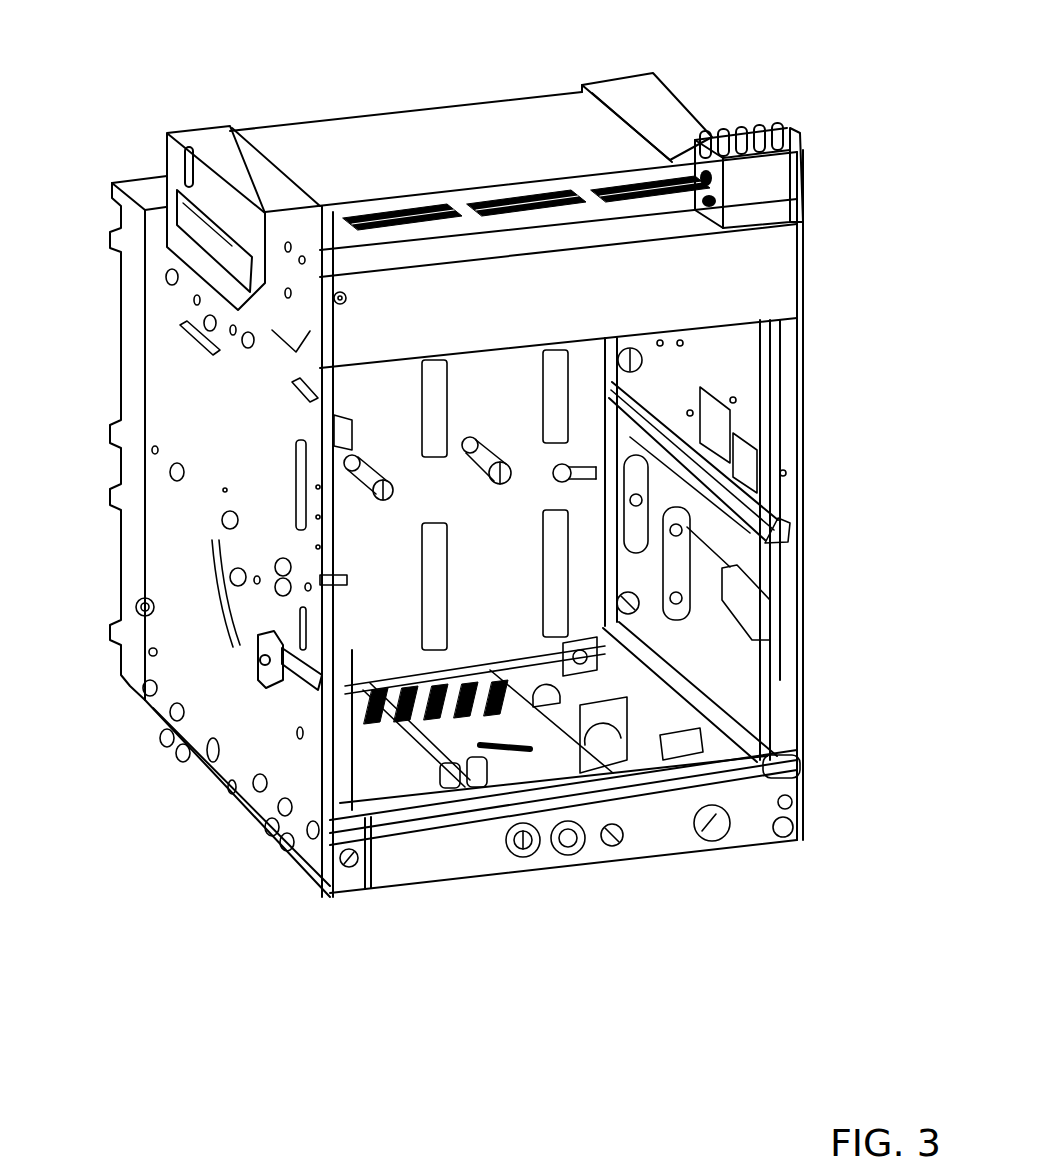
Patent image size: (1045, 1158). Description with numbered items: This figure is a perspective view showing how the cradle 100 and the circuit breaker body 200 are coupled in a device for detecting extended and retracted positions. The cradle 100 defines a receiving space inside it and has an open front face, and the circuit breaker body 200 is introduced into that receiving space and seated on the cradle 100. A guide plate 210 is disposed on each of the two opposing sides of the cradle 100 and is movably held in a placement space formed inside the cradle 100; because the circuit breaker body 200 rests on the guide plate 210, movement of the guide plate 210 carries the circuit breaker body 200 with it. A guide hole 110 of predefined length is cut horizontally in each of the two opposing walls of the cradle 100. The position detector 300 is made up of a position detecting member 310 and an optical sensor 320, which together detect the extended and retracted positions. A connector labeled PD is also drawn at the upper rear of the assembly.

The cradle 100 is at (195, 405).
The circuit breaker body 200 is at (516, 428).
The position detector connector PD is at (790, 175).
The guide hole 110 is at (330, 895).
The guide plate 210 is at (365, 810).
The position detector 300 is at (264, 818).
The position detecting member 310 is at (292, 690).
The optical sensor 320 is at (263, 678).